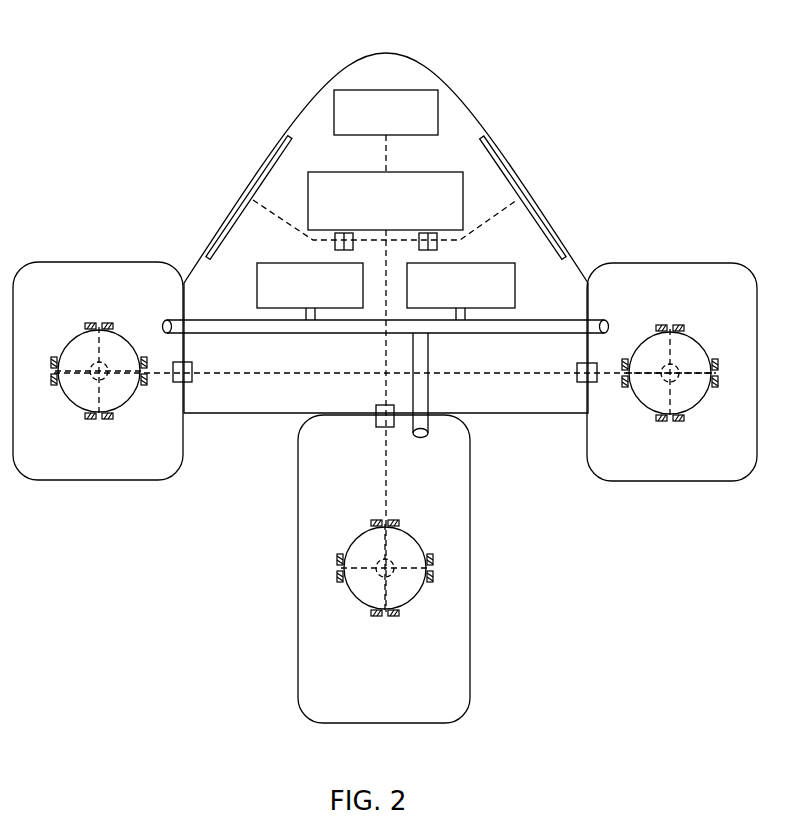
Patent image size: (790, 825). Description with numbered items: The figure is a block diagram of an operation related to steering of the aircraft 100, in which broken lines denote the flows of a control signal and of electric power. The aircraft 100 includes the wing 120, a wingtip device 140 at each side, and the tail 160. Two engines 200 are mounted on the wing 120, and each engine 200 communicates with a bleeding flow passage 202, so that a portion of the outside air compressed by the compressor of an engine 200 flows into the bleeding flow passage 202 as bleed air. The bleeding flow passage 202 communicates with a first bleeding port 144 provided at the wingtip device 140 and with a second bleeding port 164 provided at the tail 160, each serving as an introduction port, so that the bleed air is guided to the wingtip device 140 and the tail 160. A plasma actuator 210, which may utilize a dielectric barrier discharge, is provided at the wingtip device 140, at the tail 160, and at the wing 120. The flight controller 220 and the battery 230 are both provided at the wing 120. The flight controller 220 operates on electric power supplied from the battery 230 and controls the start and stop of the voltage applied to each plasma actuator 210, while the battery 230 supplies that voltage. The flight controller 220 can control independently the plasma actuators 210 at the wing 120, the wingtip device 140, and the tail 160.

The aircraft 100 is at (239, 71).
The wing 120 is at (322, 78).
The wingtip device 140 is at (63, 261).
The first bleeding port 144 is at (163, 323).
The tail 160 is at (388, 724).
The second bleeding port 164 is at (421, 438).
The engine 200 is at (257, 284).
The bleeding flow passage 202 is at (489, 339).
The plasma actuator 210 is at (256, 174).
The flight controller 220 is at (462, 178).
The battery 230 is at (425, 89).